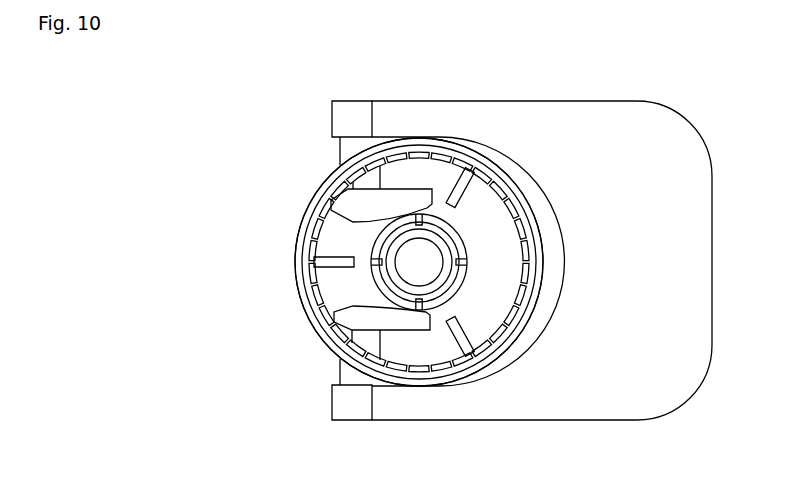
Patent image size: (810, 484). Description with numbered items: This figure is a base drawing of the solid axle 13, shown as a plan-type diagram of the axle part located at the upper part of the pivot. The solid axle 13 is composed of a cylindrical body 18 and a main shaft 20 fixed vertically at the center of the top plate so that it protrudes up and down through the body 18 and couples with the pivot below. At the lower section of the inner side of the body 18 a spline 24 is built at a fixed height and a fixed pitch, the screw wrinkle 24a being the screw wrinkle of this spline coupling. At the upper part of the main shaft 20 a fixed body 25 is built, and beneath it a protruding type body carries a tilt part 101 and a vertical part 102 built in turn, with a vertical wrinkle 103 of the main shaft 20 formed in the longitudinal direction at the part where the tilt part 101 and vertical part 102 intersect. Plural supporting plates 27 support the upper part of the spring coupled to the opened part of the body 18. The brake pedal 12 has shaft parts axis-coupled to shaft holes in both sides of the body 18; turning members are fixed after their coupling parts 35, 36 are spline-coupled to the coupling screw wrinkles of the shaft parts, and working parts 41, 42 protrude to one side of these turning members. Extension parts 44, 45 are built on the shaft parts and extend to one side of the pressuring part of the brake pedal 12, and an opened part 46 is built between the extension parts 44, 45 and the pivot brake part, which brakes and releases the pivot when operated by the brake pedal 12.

The brake pedal 12 is at (583, 104).
The solid axle 13 is at (291, 224).
The cylindrical body 18 is at (295, 258).
The main shaft 20 is at (396, 268).
The spline 24 is at (508, 202).
The screw wrinkle of spline coupling 24a is at (519, 206).
The fixed body 25 is at (469, 293).
The supporting plates 27 is at (463, 167).
The coupling part 35 is at (346, 203).
The coupling part 36 is at (345, 318).
The working part 41 is at (395, 193).
The working part 42 is at (404, 327).
The extension part 44 is at (387, 107).
The extension part 45 is at (403, 420).
The opened part 46 is at (497, 153).
The tilt part 101 is at (468, 198).
The vertical part 102 is at (440, 231).
The vertical wrinkle 103 is at (419, 219).